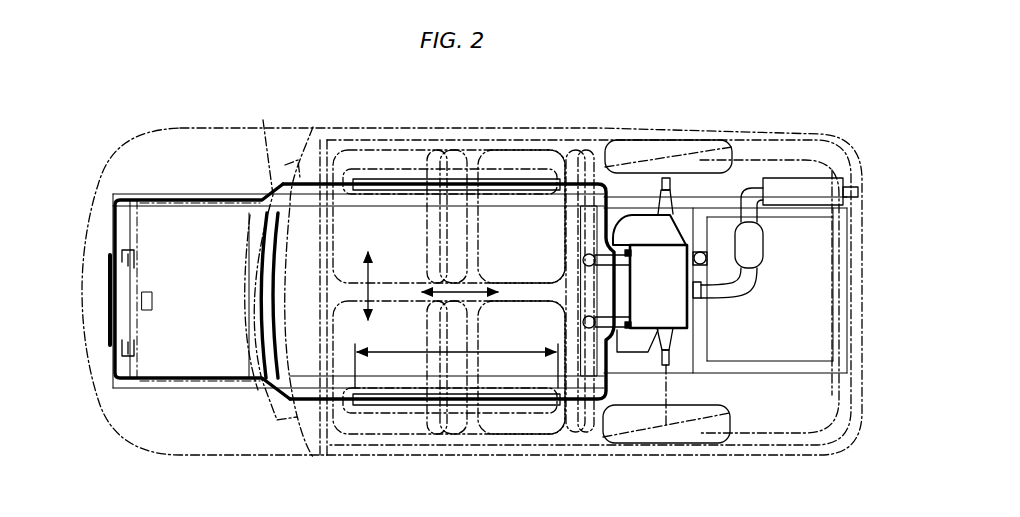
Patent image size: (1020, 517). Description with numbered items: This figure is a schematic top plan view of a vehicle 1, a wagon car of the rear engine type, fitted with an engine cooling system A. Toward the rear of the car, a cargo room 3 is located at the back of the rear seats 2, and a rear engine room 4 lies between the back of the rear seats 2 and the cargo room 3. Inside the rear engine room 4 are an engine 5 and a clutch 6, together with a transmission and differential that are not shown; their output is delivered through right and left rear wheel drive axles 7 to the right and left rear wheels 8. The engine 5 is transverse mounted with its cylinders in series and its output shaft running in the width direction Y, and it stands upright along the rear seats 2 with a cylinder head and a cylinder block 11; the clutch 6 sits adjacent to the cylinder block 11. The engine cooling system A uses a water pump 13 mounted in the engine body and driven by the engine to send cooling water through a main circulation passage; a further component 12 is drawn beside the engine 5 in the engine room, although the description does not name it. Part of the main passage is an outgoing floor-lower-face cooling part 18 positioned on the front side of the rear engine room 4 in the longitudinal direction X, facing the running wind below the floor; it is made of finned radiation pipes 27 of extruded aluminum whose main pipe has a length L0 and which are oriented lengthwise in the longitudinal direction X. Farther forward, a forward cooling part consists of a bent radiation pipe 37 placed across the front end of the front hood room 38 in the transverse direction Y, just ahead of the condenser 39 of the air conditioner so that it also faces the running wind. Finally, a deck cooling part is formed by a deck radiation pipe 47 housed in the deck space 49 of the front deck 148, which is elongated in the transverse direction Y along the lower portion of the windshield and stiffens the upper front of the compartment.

The vehicle 1 is at (840, 132).
The rear seats 2 is at (548, 150).
The cargo room 3 is at (753, 178).
The rear engine room 4 is at (635, 258).
The engine 5 is at (672, 308).
The clutch 6 is at (668, 233).
The rear wheel drive axles 7 is at (672, 192).
The rear wheels 8 is at (716, 157).
The cylinder block 11 is at (585, 292).
The air cleaner 12 is at (757, 253).
The water pump 13 is at (798, 198).
The outgoing floor-lower-face cooling part 18 is at (480, 170).
The finned radiation pipes 27 is at (528, 191).
The bent radiation pipe 37 is at (128, 259).
The front hood room 38 is at (206, 235).
The condenser 39 is at (130, 356).
The deck radiation pipe 47 is at (260, 270).
The deck space 49 is at (284, 176).
The front deck 148 is at (272, 165).
The engine cooling system A is at (406, 168).
The longitudinal direction X is at (476, 290).
The width direction Y is at (377, 286).
The length of the main pipe L0 is at (456, 359).